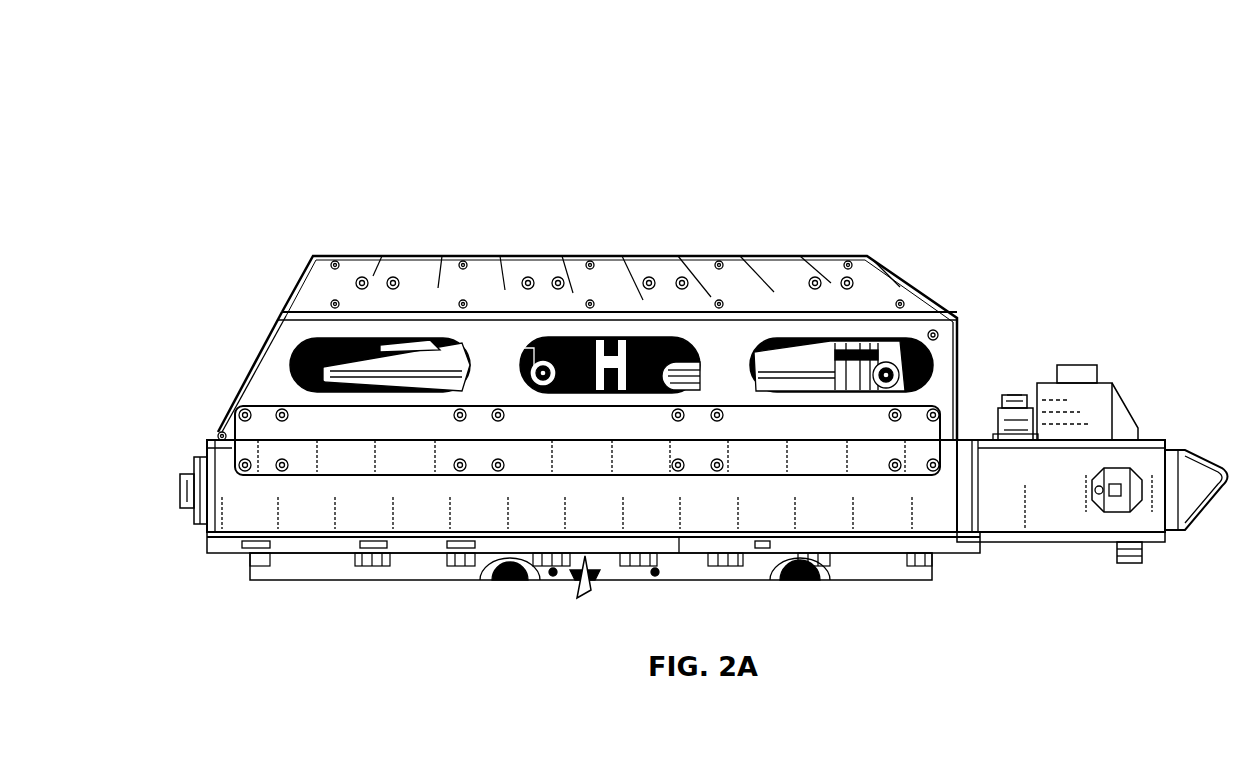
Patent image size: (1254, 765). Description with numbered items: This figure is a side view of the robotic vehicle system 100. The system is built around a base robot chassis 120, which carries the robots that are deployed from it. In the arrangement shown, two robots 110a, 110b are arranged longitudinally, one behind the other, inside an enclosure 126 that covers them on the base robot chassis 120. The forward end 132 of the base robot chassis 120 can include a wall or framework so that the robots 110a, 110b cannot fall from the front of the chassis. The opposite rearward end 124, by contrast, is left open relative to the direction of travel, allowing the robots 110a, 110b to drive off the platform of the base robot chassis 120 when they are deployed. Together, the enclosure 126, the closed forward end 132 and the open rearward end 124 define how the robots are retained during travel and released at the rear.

The robotic vehicle system 100 is at (175, 97).
The robot 110a is at (341, 382).
The robot 110b is at (800, 382).
The base robot chassis 120 is at (1137, 385).
The rearward end 124 is at (214, 440).
The enclosure 126 is at (781, 272).
The forward end 132 is at (964, 342).